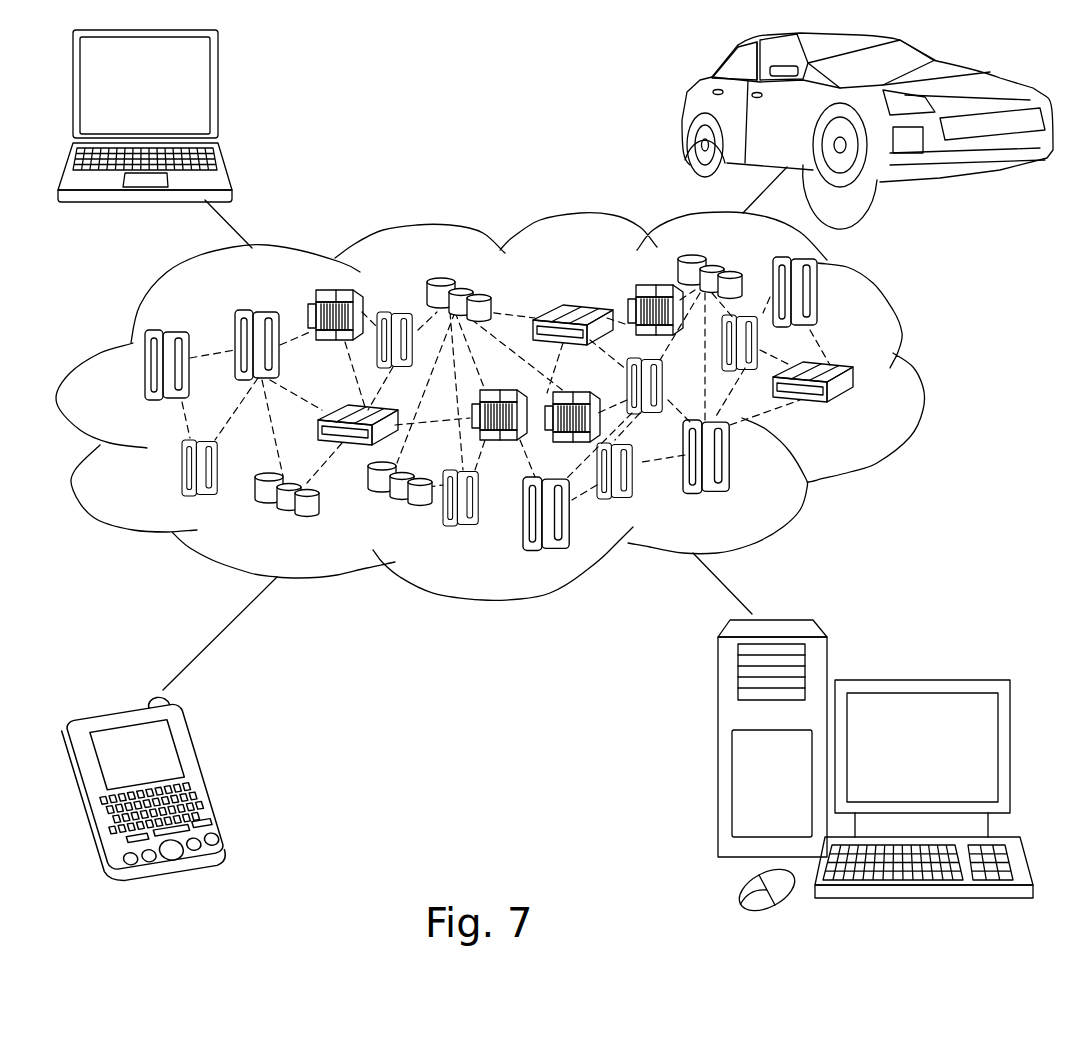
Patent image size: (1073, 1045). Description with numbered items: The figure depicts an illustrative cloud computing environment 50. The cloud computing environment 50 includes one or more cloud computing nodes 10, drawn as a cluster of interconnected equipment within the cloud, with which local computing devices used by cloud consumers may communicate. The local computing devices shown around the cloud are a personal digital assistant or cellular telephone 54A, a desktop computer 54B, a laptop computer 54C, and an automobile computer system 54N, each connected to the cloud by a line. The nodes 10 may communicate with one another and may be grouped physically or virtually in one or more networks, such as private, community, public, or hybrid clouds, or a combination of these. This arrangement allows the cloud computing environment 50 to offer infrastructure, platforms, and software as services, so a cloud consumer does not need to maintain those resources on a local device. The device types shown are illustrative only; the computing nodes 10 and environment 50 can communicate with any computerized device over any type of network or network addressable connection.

The cloud computing node 10 is at (868, 415).
The cloud computing environment 50 is at (922, 382).
The personal digital assistant or cellular telephone 54A is at (210, 778).
The desktop computer 54B is at (919, 680).
The laptop computer 54C is at (222, 97).
The automobile computer system 54N is at (687, 110).